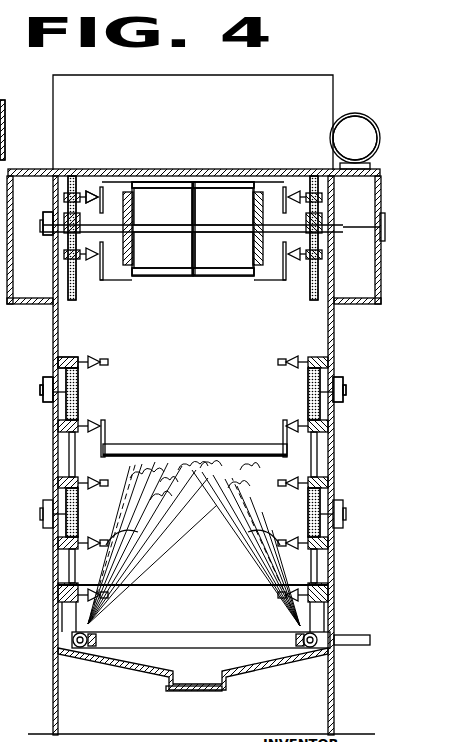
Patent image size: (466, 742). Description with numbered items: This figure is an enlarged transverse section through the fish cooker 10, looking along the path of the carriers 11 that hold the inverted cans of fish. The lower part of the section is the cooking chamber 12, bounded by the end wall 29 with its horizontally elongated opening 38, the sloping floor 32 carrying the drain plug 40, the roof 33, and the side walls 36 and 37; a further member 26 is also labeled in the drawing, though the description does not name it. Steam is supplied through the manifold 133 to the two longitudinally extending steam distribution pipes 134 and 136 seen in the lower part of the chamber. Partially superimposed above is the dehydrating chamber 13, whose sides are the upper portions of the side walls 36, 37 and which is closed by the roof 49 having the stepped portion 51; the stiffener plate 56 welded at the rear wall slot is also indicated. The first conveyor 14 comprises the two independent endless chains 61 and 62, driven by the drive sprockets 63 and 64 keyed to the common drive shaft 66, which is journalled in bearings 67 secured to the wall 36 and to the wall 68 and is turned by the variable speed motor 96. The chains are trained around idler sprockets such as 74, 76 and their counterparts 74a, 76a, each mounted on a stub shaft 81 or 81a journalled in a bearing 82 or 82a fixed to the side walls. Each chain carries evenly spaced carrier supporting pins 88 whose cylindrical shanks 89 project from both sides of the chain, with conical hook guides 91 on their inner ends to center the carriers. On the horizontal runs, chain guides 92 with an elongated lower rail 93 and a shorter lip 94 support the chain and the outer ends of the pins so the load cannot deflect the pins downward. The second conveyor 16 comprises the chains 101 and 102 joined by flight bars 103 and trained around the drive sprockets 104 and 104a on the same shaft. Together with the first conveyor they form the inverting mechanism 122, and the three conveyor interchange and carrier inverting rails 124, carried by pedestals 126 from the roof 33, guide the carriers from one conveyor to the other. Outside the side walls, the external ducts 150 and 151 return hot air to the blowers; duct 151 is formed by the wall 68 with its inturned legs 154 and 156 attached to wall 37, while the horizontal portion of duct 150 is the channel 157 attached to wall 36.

The fish cooker 10 is at (304, 66).
The carriers 11 is at (116, 168).
The cooking chamber 12 is at (112, 609).
The dehydrating chamber 13 is at (216, 184).
The first conveyor 14 is at (70, 300).
The second conveyor 16 is at (244, 182).
The tray 26 is at (105, 422).
The end wall 29 is at (212, 365).
The sloping floor 32 is at (256, 668).
The roof 33 is at (260, 304).
The side wall 36 is at (56, 454).
The side wall 37 is at (334, 452).
The horizontally elongated opening 38 is at (152, 590).
The drain plug 40 is at (175, 689).
The roof 49 is at (85, 70).
The stepped portion 51 is at (157, 100).
The stiffener plate 56 is at (14, 338).
The endless chain 61 is at (53, 185).
The endless chain 62 is at (330, 186).
The drive sprocket 63 is at (66, 236).
The drive sprocket 64 is at (322, 244).
The drive shaft 66 is at (68, 246).
The bearings 67 is at (44, 224).
The wall 68 is at (380, 222).
The idler sprocket 74 is at (308, 511).
The idler sprocket 74a is at (78, 511).
The idler sprocket 76 is at (308, 392).
The idler sprocket 76a is at (78, 382).
The stub shaft 81 is at (345, 400).
The stub shaft 81a is at (44, 384).
The bearing 82 is at (345, 386).
The bearing 82a is at (52, 402).
The carrier supporting pins 88 is at (90, 190).
The cylindrical shank 89 is at (106, 430).
The conical hook guides 91 is at (318, 182).
The chain guide 92 is at (60, 362).
The lower rail 93 is at (310, 368).
The lip 94 is at (326, 357).
The variable speed motor 96 is at (354, 114).
The chain 101 is at (138, 194).
The chain 102 is at (250, 192).
The flight bars 103 is at (168, 278).
The drive sprocket 104 is at (252, 236).
The drive sprocket 104a is at (138, 236).
The inverting mechanism 122 is at (202, 182).
The conveyor interchange and carrier inverting rails 124 is at (136, 182).
The pedestals 126 is at (195, 285).
The manifold 133 is at (200, 636).
The steam distribution pipe 134 is at (76, 648).
The steam distribution pipe 136 is at (313, 648).
The external duct 150 is at (28, 170).
The external duct 151 is at (311, 178).
The inturned leg 154 is at (355, 166).
The inturned leg 156 is at (346, 302).
The channel 157 is at (10, 296).